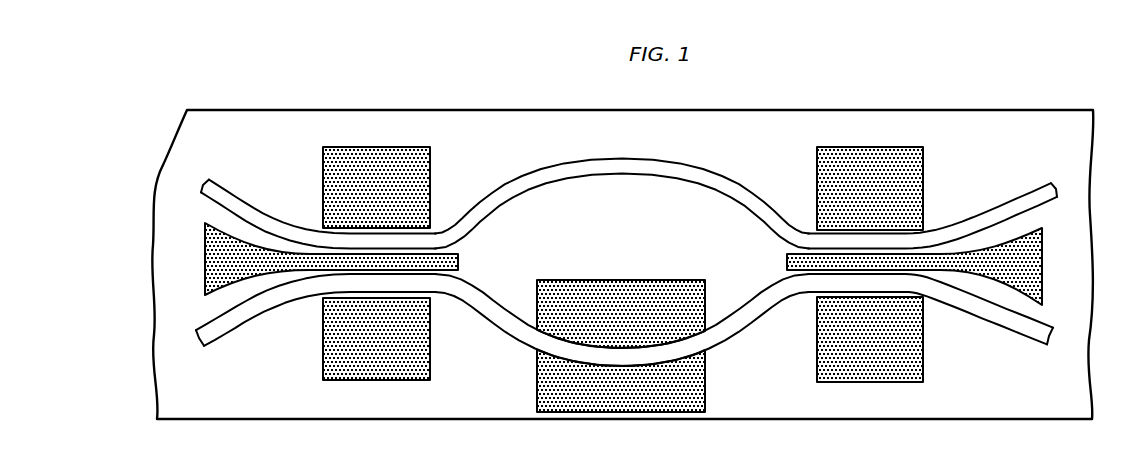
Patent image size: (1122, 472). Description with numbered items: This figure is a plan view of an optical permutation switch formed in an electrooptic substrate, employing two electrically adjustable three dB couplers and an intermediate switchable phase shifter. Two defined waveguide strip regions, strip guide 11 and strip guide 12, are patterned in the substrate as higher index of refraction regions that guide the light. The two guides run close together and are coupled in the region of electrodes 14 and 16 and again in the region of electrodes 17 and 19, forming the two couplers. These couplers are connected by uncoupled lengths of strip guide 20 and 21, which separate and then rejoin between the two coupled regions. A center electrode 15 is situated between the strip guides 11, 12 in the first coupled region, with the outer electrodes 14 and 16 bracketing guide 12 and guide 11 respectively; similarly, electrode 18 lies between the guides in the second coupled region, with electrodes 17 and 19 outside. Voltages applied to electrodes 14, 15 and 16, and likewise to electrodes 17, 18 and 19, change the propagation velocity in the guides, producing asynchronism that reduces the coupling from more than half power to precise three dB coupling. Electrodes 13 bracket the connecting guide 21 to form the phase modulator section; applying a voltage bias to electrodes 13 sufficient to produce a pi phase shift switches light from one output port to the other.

The strip guide 11 is at (230, 202).
The strip guide 12 is at (257, 308).
The electrodes 13 is at (676, 290).
The electrode 14 is at (378, 376).
The center electrode 15 is at (204, 247).
The electrode 16 is at (377, 153).
The electrode 17 is at (895, 375).
The center electrode 18 is at (1040, 257).
The electrode 19 is at (917, 153).
The connecting strip guide 20 is at (658, 160).
The connecting strip guide 21 is at (765, 314).